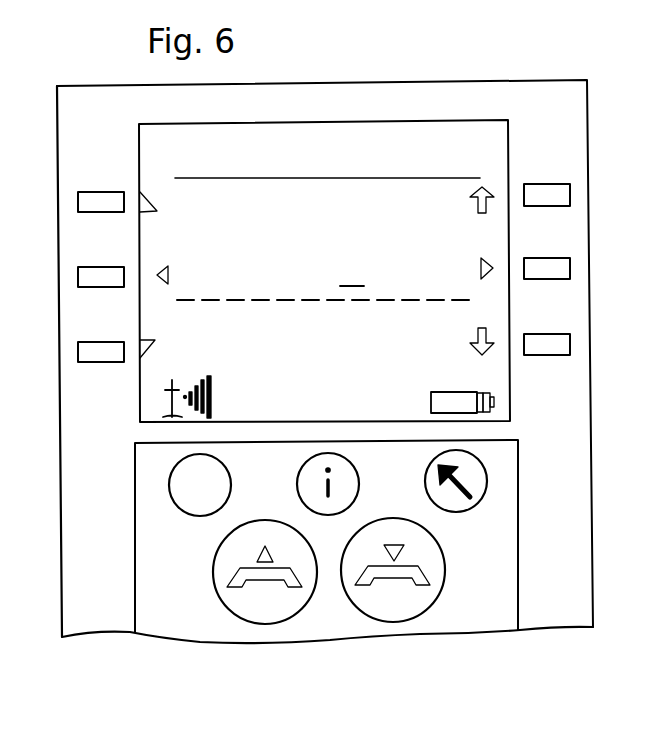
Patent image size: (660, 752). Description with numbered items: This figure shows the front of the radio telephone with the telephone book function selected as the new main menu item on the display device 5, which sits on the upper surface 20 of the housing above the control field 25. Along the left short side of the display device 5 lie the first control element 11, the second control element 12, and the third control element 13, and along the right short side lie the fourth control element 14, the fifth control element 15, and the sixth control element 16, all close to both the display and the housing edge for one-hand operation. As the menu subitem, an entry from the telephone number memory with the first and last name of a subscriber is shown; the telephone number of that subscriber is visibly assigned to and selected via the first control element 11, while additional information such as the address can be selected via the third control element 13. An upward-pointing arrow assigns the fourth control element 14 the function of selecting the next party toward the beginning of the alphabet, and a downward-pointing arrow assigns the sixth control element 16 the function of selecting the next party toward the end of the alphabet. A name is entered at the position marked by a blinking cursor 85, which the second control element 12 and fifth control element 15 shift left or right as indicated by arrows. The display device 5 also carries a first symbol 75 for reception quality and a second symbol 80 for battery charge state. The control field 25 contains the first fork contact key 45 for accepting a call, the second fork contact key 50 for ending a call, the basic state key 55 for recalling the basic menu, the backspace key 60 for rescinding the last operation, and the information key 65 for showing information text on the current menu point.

The display device 5 is at (473, 124).
The first control element 11 is at (78, 206).
The second control element 12 is at (78, 278).
The third control element 13 is at (79, 354).
The fourth control element 14 is at (558, 188).
The fifth control element 15 is at (563, 256).
The sixth control element 16 is at (552, 346).
The upper surface of the housing 20 is at (578, 521).
The control field 25 is at (192, 620).
The first fork contact key 45 is at (226, 550).
The second fork contact key 50 is at (428, 548).
The basic state key 55 is at (176, 485).
The backspace key 60 is at (475, 475).
The information key 65 is at (318, 474).
The first symbol 75 is at (215, 395).
The second symbol 80 is at (430, 402).
The cursor 85 is at (350, 284).